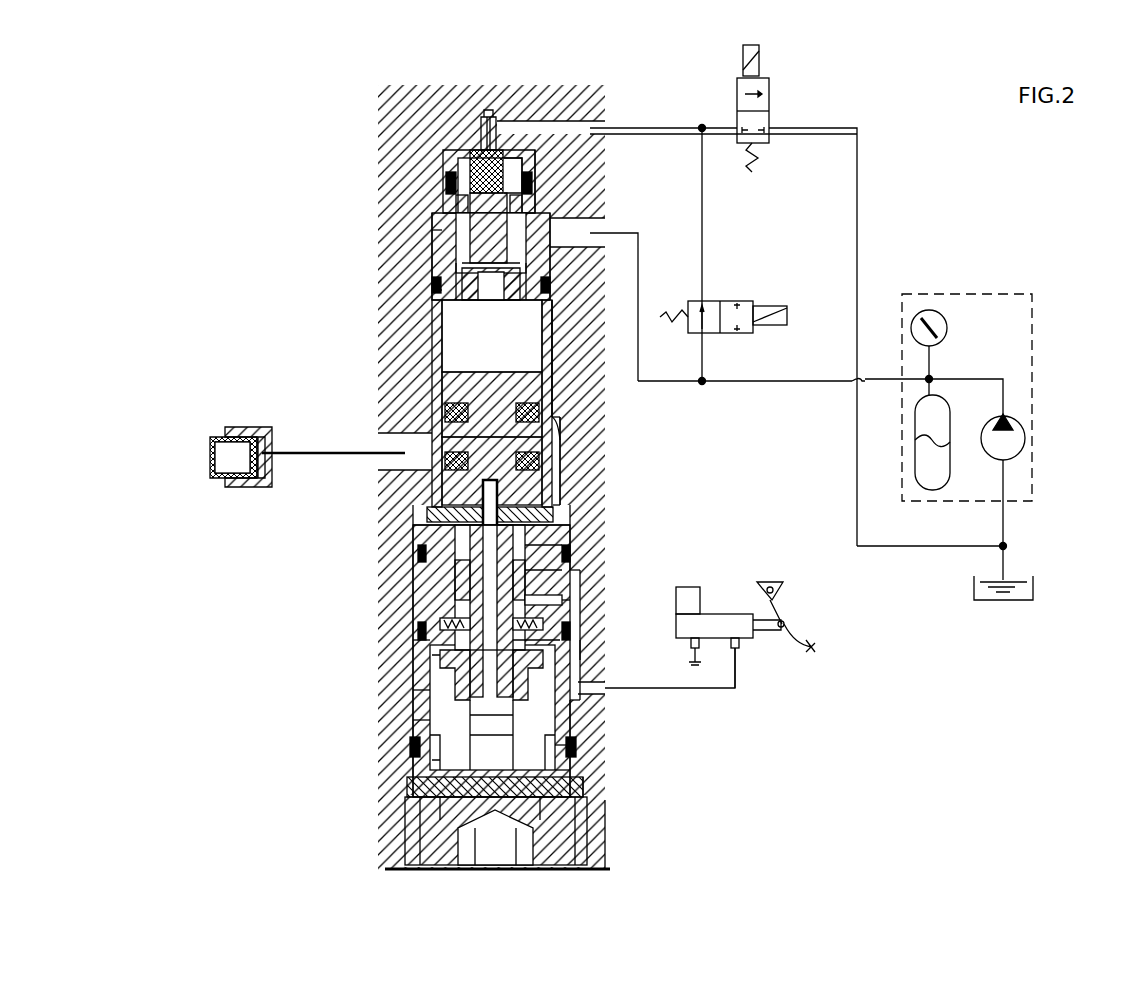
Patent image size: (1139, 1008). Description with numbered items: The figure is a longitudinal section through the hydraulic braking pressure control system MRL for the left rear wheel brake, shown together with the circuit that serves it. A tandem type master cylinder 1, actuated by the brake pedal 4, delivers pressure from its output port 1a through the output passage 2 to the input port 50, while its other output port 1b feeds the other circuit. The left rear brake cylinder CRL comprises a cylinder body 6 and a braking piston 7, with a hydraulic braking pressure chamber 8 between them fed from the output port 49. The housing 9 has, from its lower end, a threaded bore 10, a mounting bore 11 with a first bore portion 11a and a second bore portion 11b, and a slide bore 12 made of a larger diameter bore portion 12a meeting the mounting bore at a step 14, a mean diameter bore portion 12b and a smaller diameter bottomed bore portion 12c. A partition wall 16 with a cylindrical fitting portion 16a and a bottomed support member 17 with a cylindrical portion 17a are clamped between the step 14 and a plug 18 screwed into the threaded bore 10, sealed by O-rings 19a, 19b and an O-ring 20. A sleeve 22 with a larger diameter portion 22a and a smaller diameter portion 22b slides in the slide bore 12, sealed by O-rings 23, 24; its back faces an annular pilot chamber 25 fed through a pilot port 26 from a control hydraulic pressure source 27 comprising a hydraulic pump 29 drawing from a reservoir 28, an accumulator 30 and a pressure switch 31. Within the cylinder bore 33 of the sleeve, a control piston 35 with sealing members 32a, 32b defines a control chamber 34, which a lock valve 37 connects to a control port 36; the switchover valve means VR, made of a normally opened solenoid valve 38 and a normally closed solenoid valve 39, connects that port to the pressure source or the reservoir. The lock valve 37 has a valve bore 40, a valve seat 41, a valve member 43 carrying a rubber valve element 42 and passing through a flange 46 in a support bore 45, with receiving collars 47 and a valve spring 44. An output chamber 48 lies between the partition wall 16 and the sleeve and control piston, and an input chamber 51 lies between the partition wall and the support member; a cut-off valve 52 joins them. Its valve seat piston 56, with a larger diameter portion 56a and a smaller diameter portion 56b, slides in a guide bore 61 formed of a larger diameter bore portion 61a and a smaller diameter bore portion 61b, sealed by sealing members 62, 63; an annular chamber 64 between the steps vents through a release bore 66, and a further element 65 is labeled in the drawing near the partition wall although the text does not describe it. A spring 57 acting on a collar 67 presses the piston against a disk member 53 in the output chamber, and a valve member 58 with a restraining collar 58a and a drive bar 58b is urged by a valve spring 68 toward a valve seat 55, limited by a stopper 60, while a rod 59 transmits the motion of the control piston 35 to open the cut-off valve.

The tandem type master cylinder 1 is at (728, 614).
The output port 1a is at (740, 648).
The output port 1b is at (692, 648).
The hydraulic braking pressure output passage 2 is at (735, 688).
The brake pedal 4 is at (814, 645).
The cylinder body 6 is at (240, 487).
The braking piston 7 is at (215, 440).
The hydraulic braking pressure chamber 8 is at (275, 435).
The housing 9 is at (608, 455).
The threaded bore 10 is at (595, 830).
The mounting bore 11 is at (340, 630).
The first bore portion 11a is at (413, 690).
The second bore portion 11b is at (413, 640).
The slide bore 12 is at (600, 318).
The larger diameter bore portion 12a is at (560, 385).
The mean diameter bore portion 12b is at (553, 352).
The smaller diameter bottomed bore portion 12c is at (553, 320).
The step 14 is at (483, 522).
The partition wall 16 is at (570, 548).
The cylindrical fitting portion 16a is at (575, 745).
The bottomed cylindrical support member 17 is at (407, 785).
The cylindrical portion 17a is at (583, 790).
The plug 18 is at (405, 836).
The O-ring 19a is at (418, 552).
The O-ring 19b is at (418, 600).
The O-ring 20 is at (583, 770).
The sleeve 22 is at (330, 225).
The larger diameter portion 22a is at (432, 290).
The smaller diameter portion 22b is at (432, 235).
The O-ring 23 is at (490, 298).
The O-ring 24 is at (447, 180).
The annular pilot chamber 25 is at (545, 215).
The pilot port 26 is at (590, 222).
The control hydraulic pressure source 27 is at (983, 294).
The reservoir 28 is at (974, 585).
The hydraulic pump 29 is at (995, 460).
The accumulator 30 is at (950, 472).
The pressure switch 31 is at (947, 326).
The sealing member 32a is at (442, 398).
The sealing member 32b is at (442, 478).
The cylinder bore 33 is at (432, 362).
The control chamber 34 is at (503, 359).
The control piston 35 is at (503, 419).
The control port 36 is at (588, 126).
The lock valve 37 is at (450, 152).
The normally opened solenoid valve 38 is at (740, 300).
The normally closed solenoid valve 39 is at (768, 143).
The valve bore 40 is at (488, 117).
The valve seat 41 is at (492, 150).
The rubber valve element 42 is at (505, 165).
The valve member 43 is at (448, 204).
The valve spring 44 is at (491, 303).
The support bore 45 is at (438, 240).
The flange 46 is at (488, 228).
The receiving collars 47 is at (500, 296).
The output chamber 48 is at (427, 514).
The output port 49 is at (432, 440).
The input port 50 is at (585, 652).
The input chamber 51 is at (579, 831).
The cut-off valve 52 is at (413, 728).
The disk member 53 is at (552, 470).
The valve seat 55 is at (578, 720).
The valve seat piston 56 is at (572, 528).
The larger diameter portion 56a is at (555, 505).
The smaller diameter portion 56b is at (475, 580).
The spring 57 is at (432, 831).
The valve member 58 is at (495, 837).
The restraining collar 58a is at (550, 812).
The drive bar 58b is at (470, 695).
The rod 59 is at (565, 605).
The stopper 60 is at (493, 735).
The guide bore 61 is at (492, 466).
The larger diameter bore portion 61a is at (472, 611).
The smaller diameter bore portion 61b is at (560, 640).
The sealing member 62 is at (575, 560).
The sealing member 63 is at (449, 620).
The annular chamber 64 is at (535, 627).
The passage 65 is at (578, 618).
The release bore 66 is at (580, 575).
The collar 67 is at (592, 688).
The valve spring 68 is at (456, 812).
The left rear brake cylinder CRL is at (243, 426).
The hydraulic braking pressure control system for left rear wheel brake MRL is at (605, 438).
The switchover valve means VR is at (808, 192).